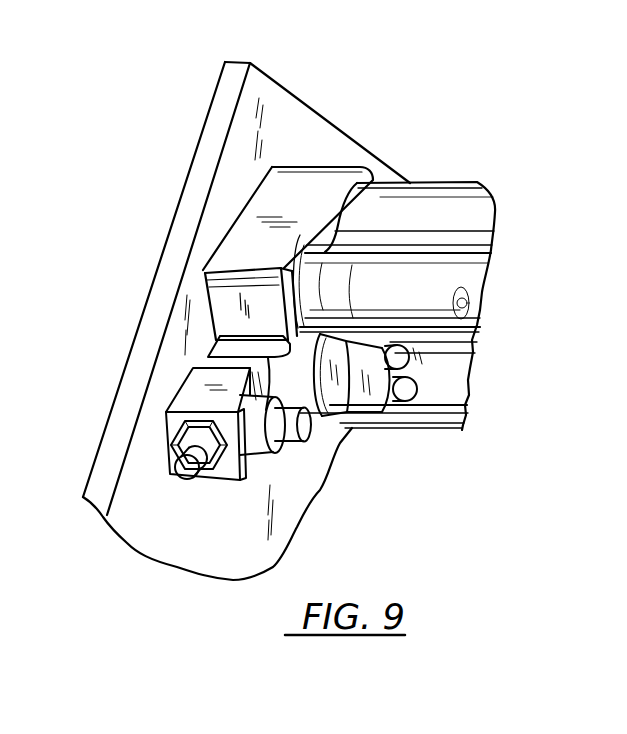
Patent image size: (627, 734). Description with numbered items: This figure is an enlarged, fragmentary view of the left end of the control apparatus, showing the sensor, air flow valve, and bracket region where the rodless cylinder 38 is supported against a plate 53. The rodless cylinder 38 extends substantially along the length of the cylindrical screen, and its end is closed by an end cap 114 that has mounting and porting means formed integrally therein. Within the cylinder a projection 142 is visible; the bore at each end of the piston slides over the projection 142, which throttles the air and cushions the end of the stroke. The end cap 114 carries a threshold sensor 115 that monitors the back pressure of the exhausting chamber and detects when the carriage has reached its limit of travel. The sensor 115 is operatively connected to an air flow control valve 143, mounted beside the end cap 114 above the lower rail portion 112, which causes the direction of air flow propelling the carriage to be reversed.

The mounting plate 53 is at (188, 167).
The end cap 114 is at (312, 183).
The rodless cylinder 38 is at (508, 133).
The projection 142 is at (400, 286).
The rail base 112 is at (427, 420).
The threshold sensor 115 is at (373, 390).
The air flow control valve 143 is at (253, 462).